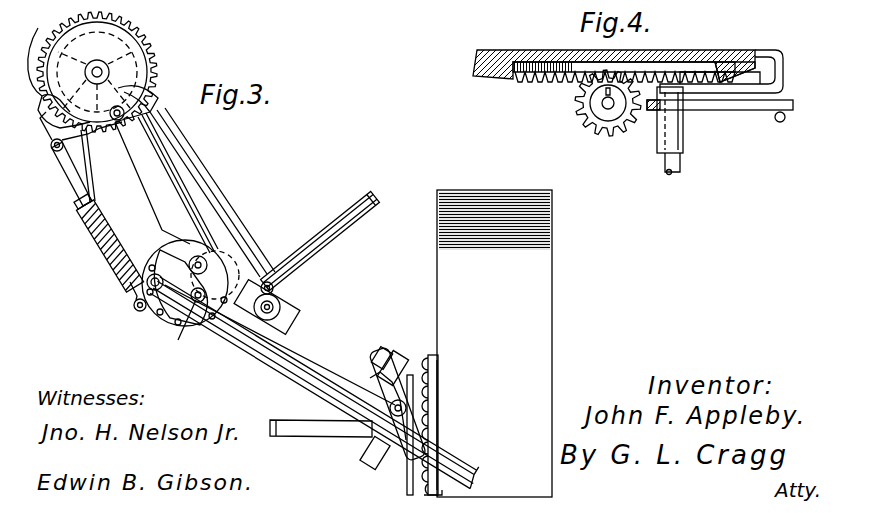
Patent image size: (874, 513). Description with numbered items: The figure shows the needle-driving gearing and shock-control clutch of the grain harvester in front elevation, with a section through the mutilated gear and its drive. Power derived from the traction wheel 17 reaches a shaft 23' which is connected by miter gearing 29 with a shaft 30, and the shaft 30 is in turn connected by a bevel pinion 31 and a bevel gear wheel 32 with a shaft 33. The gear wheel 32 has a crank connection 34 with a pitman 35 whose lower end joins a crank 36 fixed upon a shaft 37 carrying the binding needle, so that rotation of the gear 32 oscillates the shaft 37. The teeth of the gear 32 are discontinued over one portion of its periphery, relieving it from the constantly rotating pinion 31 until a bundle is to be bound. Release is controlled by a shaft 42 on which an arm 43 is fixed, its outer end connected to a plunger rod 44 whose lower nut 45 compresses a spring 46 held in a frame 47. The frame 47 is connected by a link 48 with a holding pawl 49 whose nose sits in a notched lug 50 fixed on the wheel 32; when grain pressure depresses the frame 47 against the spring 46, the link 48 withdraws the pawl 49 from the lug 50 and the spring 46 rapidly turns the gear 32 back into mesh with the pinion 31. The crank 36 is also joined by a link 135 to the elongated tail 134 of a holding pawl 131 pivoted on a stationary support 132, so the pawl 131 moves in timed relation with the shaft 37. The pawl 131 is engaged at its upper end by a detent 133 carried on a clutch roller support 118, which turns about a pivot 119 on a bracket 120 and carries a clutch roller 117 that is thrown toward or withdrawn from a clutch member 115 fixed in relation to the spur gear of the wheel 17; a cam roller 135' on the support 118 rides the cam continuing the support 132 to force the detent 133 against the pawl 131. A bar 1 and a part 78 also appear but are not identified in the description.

In FIG. 3, the frame bar 1 is at (350, 220).
In FIG. 3, the traction wheel 17 is at (487, 200).
In FIG. 3, the shaft 23' is at (290, 301).
In FIG. 3, the miter gearing 29 is at (284, 316).
In FIG. 3, the shaft 30 is at (162, 130).
In FIG. 4, the shaft 30 is at (604, 104).
In FIG. 3, the bevel pinion 31 is at (126, 112).
In FIG. 4, the bevel pinion 31 is at (602, 128).
In FIG. 3, the bevel gear wheel 32 is at (152, 50).
In FIG. 4, the bevel gear wheel 32 is at (476, 58).
In FIG. 3, the shaft 33 is at (97, 66).
In FIG. 3, the crank connection 34 is at (140, 92).
In FIG. 3, the pitman 35 is at (208, 214).
In FIG. 3, the crank 36 is at (225, 264).
In FIG. 3, the shaft 37 is at (168, 248).
In FIG. 4, the shaft 42 is at (682, 160).
In FIG. 3, the arm 43 is at (86, 140).
In FIG. 4, the arm 43 is at (762, 112).
In FIG. 3, the plunger rod 44 is at (68, 170).
In FIG. 4, the plunger rod 44 is at (786, 117).
In FIG. 3, the nut or enlargement 45 is at (128, 284).
In FIG. 3, the spring 46 is at (104, 250).
In FIG. 3, the frame 47 is at (84, 218).
In FIG. 3, the link 48 is at (93, 174).
In FIG. 4, the link 48 is at (686, 112).
In FIG. 3, the holding pawl 49 is at (54, 150).
In FIG. 4, the holding pawl 49 is at (783, 74).
In FIG. 3, the notched lug 50 is at (42, 33).
In FIG. 4, the notched lug 50 is at (770, 48).
In FIG. 3, the arm 78 is at (190, 322).
In FIG. 3, the clutch member 115 is at (438, 372).
In FIG. 3, the clutch roller 117 is at (398, 356).
In FIG. 3, the clutch roller support 118 is at (378, 356).
In FIG. 3, the pivot 119 is at (406, 408).
In FIG. 3, the bracket 120 is at (352, 438).
In FIG. 3, the holding pawl 131 is at (372, 378).
In FIG. 3, the stationary support 132 is at (408, 488).
In FIG. 3, the detent 133 is at (372, 372).
In FIG. 3, the elongated tail 134 is at (370, 466).
In FIG. 3, the link 135 is at (316, 381).
In FIG. 3, the cam roller 135' is at (448, 403).